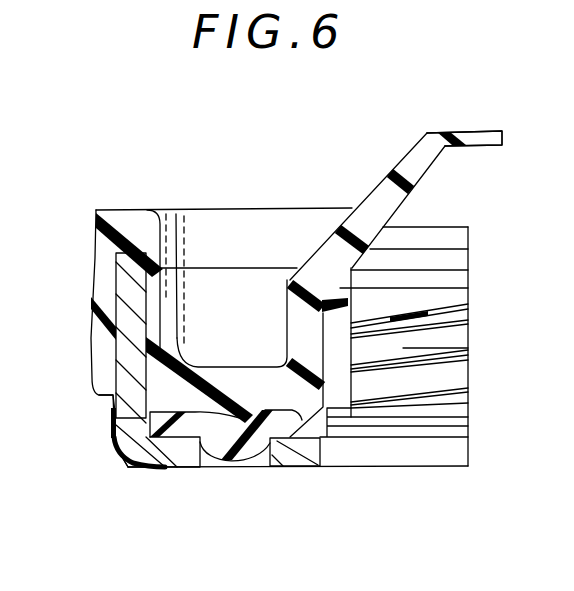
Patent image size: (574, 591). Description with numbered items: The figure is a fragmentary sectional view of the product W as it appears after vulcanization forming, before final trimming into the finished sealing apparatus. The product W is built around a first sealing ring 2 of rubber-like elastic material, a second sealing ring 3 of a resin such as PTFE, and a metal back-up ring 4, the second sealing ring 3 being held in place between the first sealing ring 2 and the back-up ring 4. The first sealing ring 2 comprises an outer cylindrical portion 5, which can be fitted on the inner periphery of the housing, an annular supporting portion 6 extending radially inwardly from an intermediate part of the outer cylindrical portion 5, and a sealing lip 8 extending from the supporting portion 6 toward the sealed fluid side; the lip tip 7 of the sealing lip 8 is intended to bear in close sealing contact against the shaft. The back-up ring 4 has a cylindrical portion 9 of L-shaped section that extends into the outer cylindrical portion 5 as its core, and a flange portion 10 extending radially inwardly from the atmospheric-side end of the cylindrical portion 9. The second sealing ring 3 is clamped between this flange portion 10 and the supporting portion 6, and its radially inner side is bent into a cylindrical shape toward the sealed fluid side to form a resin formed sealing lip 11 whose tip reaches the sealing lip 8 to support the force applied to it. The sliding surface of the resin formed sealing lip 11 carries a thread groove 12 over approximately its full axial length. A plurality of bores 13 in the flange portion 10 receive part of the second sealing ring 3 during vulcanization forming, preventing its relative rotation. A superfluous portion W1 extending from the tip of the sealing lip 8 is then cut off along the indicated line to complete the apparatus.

The product W is at (122, 170).
The superfluous portion W1 is at (405, 163).
The first sealing ring 2 is at (117, 338).
The second sealing ring 3 is at (343, 449).
The back-up ring 4 is at (128, 455).
The outer cylindrical portion 5 is at (184, 330).
The annular supporting portion 6 is at (213, 367).
The lip tip 7 is at (312, 268).
The sealing lip 8 is at (287, 318).
The cylindrical portion 9 is at (114, 408).
The flange portion 10 is at (180, 467).
The resin formed sealing lip 11 is at (455, 308).
The thread groove 12 is at (450, 347).
The bores 13 is at (262, 467).